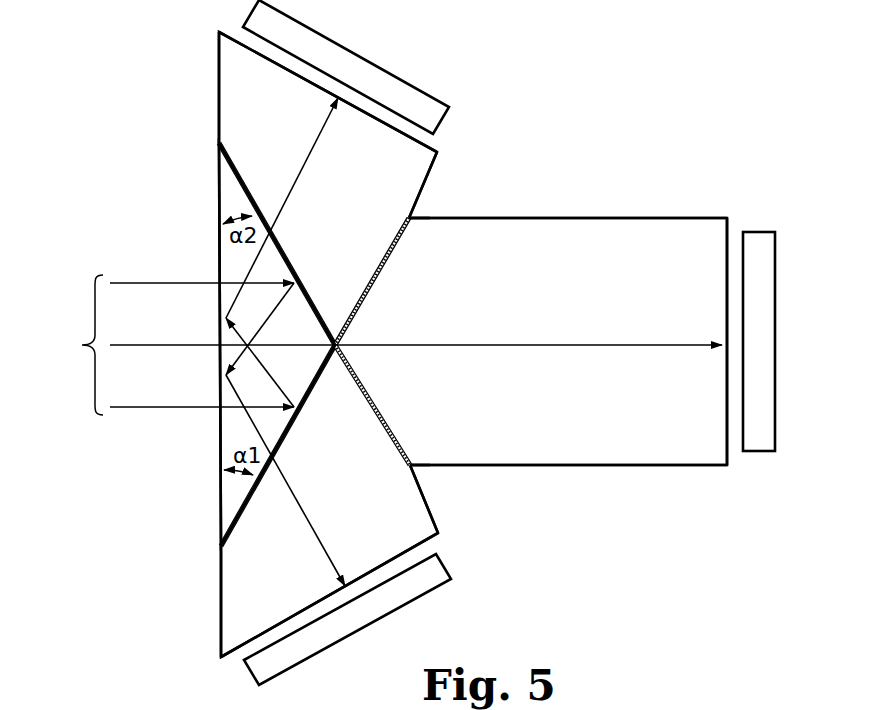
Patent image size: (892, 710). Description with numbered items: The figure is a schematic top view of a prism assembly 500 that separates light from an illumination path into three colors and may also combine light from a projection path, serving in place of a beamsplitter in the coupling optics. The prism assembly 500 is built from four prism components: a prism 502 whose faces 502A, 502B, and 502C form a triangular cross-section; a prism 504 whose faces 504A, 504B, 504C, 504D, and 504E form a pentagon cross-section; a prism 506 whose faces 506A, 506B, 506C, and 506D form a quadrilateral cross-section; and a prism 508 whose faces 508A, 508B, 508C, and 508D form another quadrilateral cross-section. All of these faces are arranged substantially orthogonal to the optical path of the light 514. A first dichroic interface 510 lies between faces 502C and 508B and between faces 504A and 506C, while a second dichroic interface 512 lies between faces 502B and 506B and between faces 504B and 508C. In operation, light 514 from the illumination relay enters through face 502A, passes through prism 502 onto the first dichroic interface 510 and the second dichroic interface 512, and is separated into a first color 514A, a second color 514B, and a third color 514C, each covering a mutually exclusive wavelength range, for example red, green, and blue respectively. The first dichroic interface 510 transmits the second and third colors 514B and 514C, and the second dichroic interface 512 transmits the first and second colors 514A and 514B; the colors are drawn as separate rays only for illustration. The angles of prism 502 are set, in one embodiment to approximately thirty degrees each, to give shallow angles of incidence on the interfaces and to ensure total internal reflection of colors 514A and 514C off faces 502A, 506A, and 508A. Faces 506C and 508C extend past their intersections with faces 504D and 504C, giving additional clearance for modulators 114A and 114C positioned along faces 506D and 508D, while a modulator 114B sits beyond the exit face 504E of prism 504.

The modulator 114A is at (423, 91).
The modulator 114B is at (776, 433).
The modulator 114C is at (435, 590).
The prism assembly 500 is at (658, 570).
The prism 502 is at (307, 373).
The face of prism 502 502A is at (219, 247).
The face of prism 502 502B is at (243, 189).
The face of prism 502 502C is at (230, 503).
The prism 504 is at (614, 416).
The face of prism 504 504A is at (381, 268).
The face of prism 504 504B is at (366, 392).
The face of prism 504 504C is at (616, 467).
The face of prism 504 504D is at (622, 216).
The face of prism 504 504E is at (728, 226).
The prism 506 is at (351, 198).
The face of prism 506 506A is at (219, 79).
The face of prism 506 506B is at (282, 249).
The face of prism 506 506C is at (431, 168).
The face of prism 506 506D is at (437, 149).
The prism 508 is at (359, 505).
The face of prism 508 508A is at (221, 584).
The face of prism 508 508B is at (284, 438).
The face of prism 508 508C is at (434, 521).
The face of prism 508 508D is at (431, 539).
The first dichroic interface 510 is at (409, 217).
The second dichroic interface 512 is at (411, 470).
The light 514 is at (82, 345).
The first color 514A is at (153, 408).
The second color 514B is at (155, 346).
The third color 514C is at (153, 284).